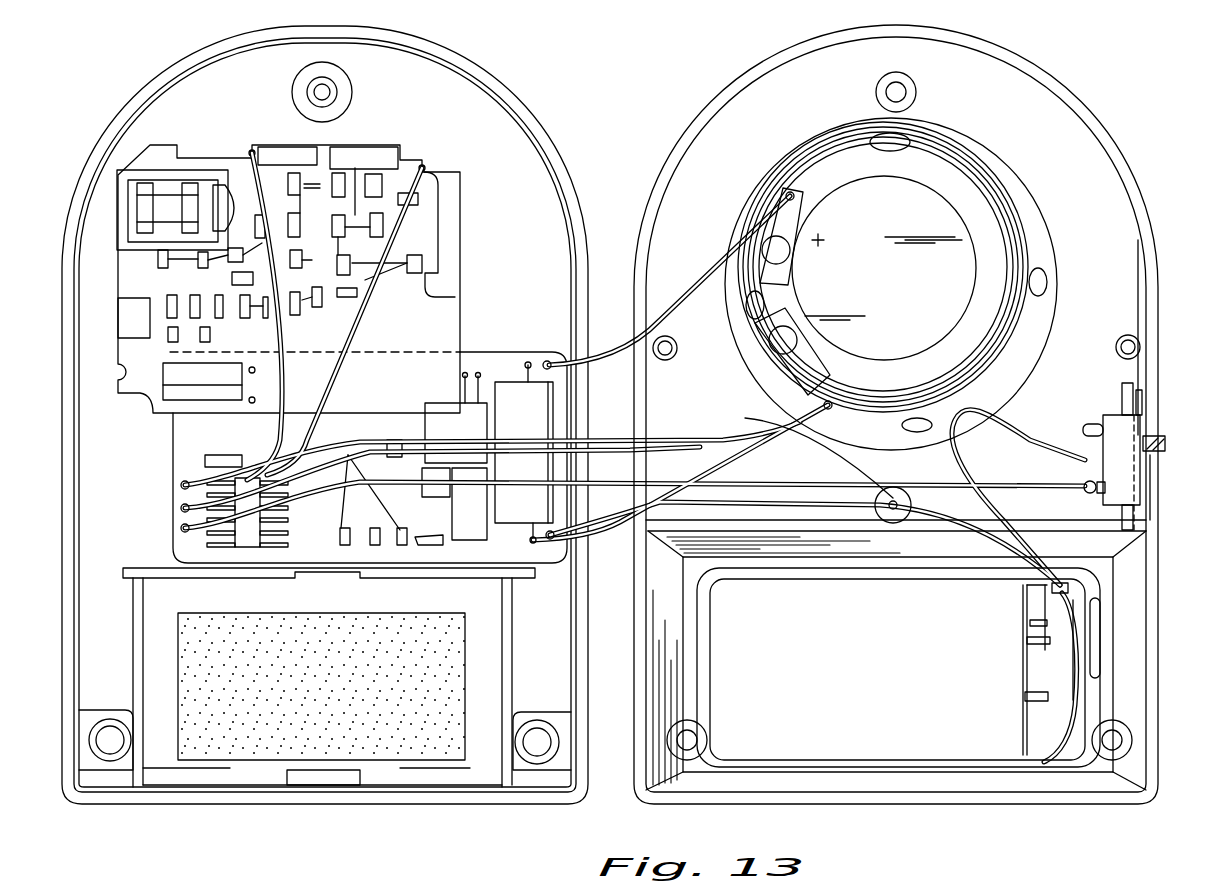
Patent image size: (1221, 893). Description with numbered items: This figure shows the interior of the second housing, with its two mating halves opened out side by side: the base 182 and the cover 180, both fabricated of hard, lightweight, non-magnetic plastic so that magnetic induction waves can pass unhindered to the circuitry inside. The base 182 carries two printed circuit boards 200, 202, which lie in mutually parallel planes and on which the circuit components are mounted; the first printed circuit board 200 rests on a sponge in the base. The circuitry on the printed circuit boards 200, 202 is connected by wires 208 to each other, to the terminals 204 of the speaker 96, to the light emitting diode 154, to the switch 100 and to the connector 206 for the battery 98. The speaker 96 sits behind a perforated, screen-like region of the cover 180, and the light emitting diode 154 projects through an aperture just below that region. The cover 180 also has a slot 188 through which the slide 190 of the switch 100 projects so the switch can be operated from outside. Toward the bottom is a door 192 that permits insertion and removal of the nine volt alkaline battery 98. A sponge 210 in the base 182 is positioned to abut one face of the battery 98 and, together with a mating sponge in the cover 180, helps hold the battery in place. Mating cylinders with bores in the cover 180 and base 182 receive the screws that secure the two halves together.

The speaker 96 is at (963, 235).
The battery 98 is at (995, 745).
The switch 100 is at (1120, 430).
The light emitting diode 154 is at (912, 510).
The cover 180 is at (1083, 100).
The base 182 is at (190, 75).
The slot 188 is at (1150, 472).
The slide 190 is at (1160, 440).
The door 192 is at (480, 770).
The printed circuit board 200 is at (158, 158).
The printed circuit board 202 is at (503, 358).
The terminals 204 is at (775, 230).
The connector 206 is at (1053, 700).
The wires 208 is at (415, 218).
The sponge 210 is at (212, 740).